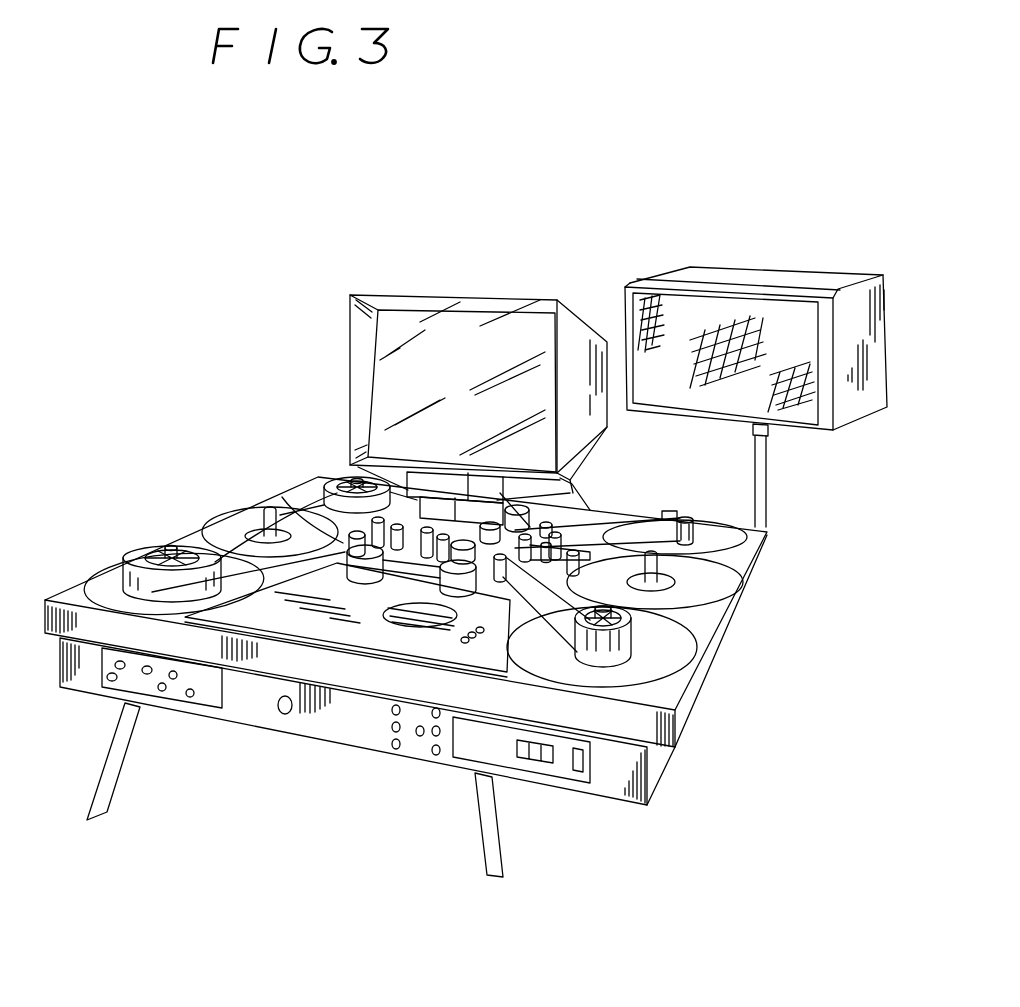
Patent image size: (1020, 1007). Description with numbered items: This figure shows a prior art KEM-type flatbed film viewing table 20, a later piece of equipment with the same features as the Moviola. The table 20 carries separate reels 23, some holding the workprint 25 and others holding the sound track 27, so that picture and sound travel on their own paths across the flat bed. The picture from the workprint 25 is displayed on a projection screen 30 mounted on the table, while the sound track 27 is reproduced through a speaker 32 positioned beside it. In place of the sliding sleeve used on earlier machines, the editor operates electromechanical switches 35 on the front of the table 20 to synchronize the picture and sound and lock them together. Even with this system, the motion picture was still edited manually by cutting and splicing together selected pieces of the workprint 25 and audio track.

The flatbed film viewing table 20 is at (663, 790).
The reels 23 is at (112, 580).
The workprint 25 is at (333, 482).
The sound track 27 is at (156, 548).
The projection screen 30 is at (410, 378).
The speaker 32 is at (594, 290).
The electromechanical switches 35 is at (400, 642).